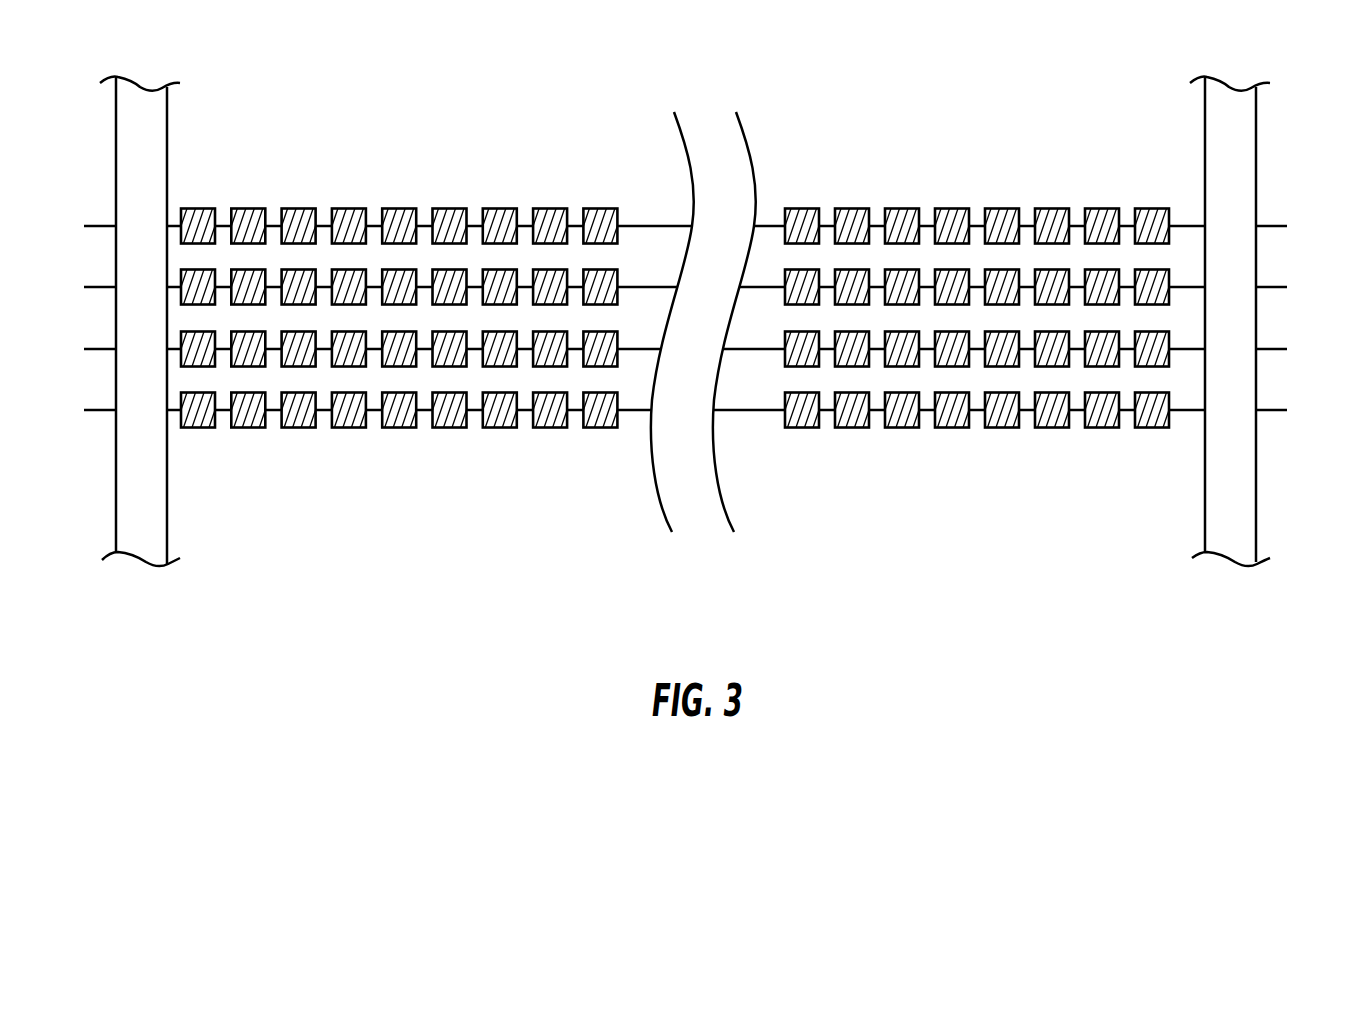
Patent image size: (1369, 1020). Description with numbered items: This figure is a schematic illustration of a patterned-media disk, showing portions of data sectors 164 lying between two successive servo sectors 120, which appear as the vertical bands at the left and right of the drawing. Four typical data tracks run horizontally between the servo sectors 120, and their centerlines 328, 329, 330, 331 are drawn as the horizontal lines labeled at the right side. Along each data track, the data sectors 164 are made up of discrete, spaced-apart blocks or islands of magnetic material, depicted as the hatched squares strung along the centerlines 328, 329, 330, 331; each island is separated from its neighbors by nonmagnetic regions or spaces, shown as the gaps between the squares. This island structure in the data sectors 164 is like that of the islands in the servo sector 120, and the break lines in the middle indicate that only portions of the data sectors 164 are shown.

The servo sector 120 is at (147, 122).
The data sector 164 is at (618, 182).
The data track centerline 328 is at (1277, 224).
The data track centerline 329 is at (1277, 285).
The data track centerline 330 is at (1277, 347).
The data track centerline 331 is at (1277, 408).